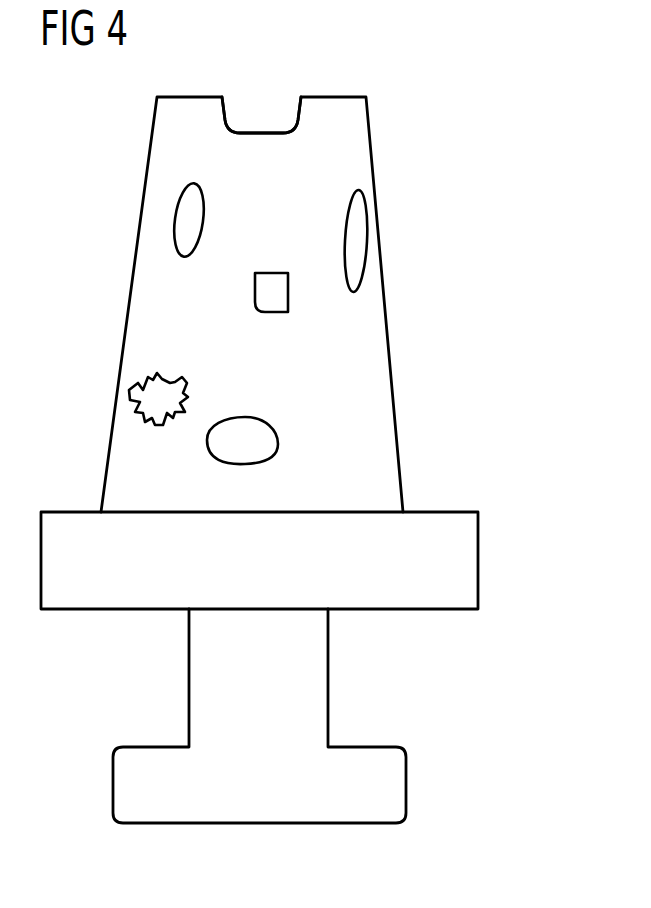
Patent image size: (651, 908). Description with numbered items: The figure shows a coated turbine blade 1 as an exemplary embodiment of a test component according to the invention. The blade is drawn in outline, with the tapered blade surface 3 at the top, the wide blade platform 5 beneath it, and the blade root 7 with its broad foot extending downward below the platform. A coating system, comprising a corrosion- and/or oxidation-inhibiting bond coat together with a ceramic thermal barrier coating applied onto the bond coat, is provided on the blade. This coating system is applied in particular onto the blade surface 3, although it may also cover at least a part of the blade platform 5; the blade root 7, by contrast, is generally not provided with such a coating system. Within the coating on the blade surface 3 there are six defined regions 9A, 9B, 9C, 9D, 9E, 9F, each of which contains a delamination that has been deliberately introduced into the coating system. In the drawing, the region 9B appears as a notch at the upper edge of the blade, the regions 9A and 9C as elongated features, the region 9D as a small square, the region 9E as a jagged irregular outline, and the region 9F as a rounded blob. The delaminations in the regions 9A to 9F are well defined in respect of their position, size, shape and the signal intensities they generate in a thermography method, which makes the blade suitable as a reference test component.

The coated turbine blade 1 is at (286, 449).
The blade surface 3 is at (378, 363).
The blade platform 5 is at (467, 563).
The blade root 7 is at (317, 682).
The defined region 9A is at (192, 222).
The defined region 9B is at (255, 123).
The defined region 9C is at (355, 233).
The defined region 9D is at (278, 293).
The defined region 9E is at (175, 392).
The defined region 9F is at (267, 443).